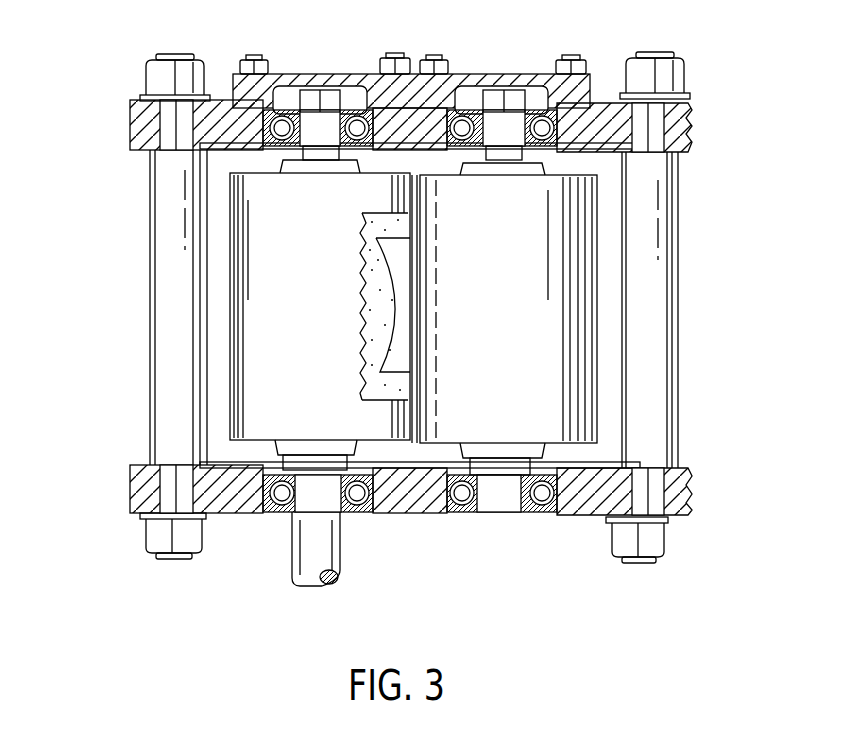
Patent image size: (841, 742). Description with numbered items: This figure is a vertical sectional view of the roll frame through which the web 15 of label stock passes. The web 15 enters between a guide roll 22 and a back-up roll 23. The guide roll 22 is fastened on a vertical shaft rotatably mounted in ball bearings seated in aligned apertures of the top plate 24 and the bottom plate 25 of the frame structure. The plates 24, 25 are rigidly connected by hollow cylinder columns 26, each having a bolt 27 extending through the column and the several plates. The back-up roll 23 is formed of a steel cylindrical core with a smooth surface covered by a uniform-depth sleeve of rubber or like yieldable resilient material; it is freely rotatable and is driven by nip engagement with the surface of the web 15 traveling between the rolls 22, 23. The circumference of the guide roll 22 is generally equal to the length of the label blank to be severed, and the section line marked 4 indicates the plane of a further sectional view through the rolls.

The web 15 is at (378, 338).
The guide roll 22 is at (337, 240).
The back-up roll 23 is at (516, 245).
The top plate 24 is at (595, 115).
The bottom plate 25 is at (590, 510).
The hollow cylinder columns 26 is at (172, 312).
The bolt 27 is at (172, 126).
The section line 4- 4 is at (277, 303).